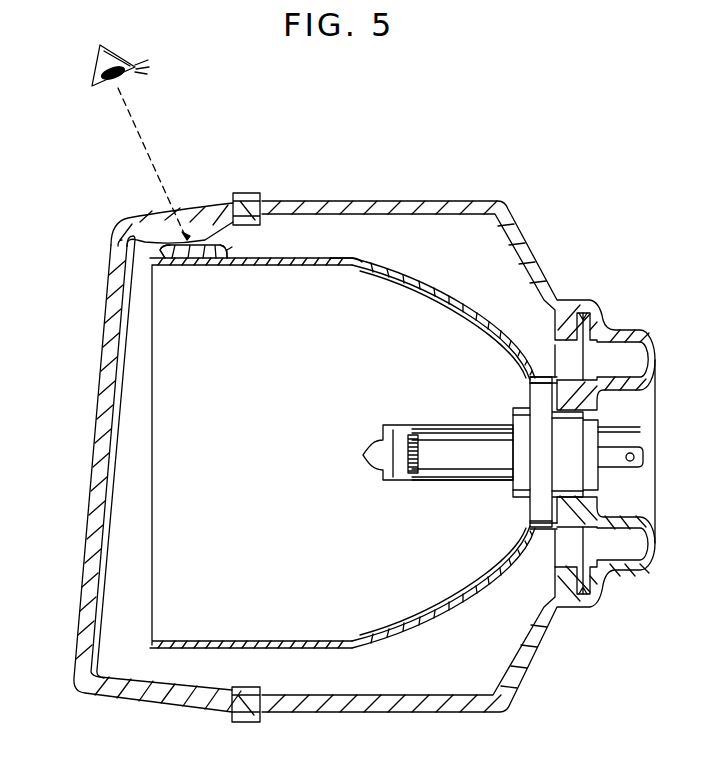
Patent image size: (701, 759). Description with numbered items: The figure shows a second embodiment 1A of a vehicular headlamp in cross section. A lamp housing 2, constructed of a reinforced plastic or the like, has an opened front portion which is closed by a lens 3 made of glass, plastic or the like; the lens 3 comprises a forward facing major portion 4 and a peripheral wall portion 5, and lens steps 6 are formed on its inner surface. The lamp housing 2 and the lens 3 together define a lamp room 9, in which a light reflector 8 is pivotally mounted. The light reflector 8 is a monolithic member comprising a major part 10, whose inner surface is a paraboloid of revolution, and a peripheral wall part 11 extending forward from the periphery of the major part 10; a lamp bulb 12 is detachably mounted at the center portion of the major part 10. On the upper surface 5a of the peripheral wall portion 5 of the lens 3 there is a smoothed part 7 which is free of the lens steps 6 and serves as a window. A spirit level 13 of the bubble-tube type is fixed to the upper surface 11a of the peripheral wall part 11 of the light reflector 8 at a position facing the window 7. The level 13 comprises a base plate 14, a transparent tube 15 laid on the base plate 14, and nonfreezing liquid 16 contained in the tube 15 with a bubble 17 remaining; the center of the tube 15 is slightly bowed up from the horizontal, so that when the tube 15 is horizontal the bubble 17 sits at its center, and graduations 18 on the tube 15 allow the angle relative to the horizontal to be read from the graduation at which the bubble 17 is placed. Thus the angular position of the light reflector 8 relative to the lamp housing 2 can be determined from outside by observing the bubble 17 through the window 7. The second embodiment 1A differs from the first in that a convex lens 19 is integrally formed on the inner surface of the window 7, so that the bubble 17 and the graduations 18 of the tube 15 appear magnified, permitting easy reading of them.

The second embodiment 1A is at (548, 170).
The lamp housing 2 is at (479, 199).
The lens 3 is at (128, 417).
The forward facing major portion 4 is at (103, 280).
The peripheral wall portion 5 is at (133, 204).
The upper surface 5a is at (198, 214).
The lens steps 6 is at (110, 480).
The smoothed part 7 is at (186, 238).
The light reflector 8 is at (407, 273).
The lamp room 9 is at (483, 291).
The major part 10 is at (447, 304).
The peripheral wall part 11 is at (313, 257).
The upper surface 11a is at (333, 257).
The lamp bulb 12 is at (422, 425).
The spirit level 13 is at (160, 214).
The base plate 14 is at (228, 249).
The transparent tube 15 is at (221, 212).
The nonfreezing liquid 16 is at (223, 260).
The bubble 17 is at (195, 259).
The graduations 18 is at (172, 262).
The convex lens 19 is at (116, 247).